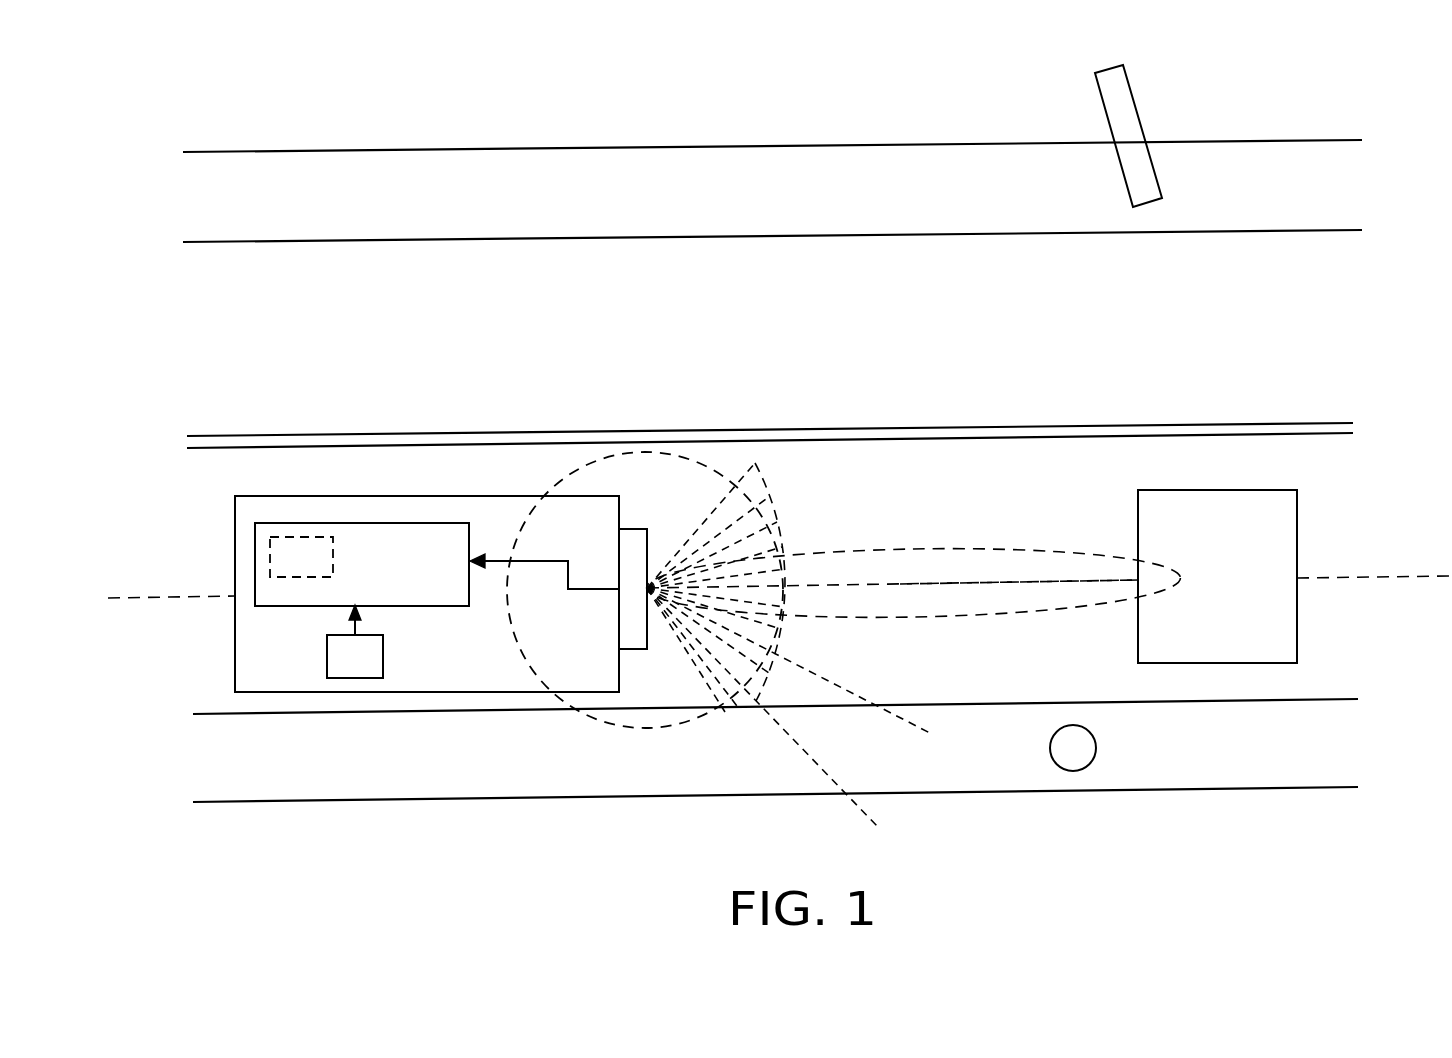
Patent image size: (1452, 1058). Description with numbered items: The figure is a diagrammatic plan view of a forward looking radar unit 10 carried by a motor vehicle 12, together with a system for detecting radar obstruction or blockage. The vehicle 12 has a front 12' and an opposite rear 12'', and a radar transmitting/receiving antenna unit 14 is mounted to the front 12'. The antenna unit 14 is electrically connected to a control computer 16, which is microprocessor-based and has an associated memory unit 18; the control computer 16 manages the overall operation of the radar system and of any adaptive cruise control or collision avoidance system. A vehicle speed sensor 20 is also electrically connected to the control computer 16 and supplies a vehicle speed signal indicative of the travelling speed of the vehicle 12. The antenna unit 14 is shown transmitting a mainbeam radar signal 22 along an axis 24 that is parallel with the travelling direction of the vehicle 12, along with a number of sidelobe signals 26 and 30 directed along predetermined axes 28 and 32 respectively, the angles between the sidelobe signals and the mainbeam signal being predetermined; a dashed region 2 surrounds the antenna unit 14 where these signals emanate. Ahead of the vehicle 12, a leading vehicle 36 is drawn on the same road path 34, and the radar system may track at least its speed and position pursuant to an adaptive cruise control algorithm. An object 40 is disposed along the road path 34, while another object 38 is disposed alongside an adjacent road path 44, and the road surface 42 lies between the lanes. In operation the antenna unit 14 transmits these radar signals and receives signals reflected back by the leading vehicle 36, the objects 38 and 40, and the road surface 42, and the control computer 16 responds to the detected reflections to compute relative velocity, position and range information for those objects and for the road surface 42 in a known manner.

The sensing region 2 is at (575, 462).
The forward looking radar unit 10 is at (419, 659).
The motor vehicle 12 is at (427, 570).
The front 12' is at (653, 671).
The rear 12'' is at (192, 656).
The radar transmitting/receiving antenna unit 14 is at (632, 528).
The control computer 16 is at (380, 522).
The memory unit 18 is at (300, 536).
The vehicle speed sensor 20 is at (384, 648).
The mainbeam radar signal 22 is at (950, 548).
The axis 24 is at (1020, 578).
The sidelobe signals 26 is at (788, 508).
The axis 28 is at (848, 690).
The sidelobe signals 30 is at (755, 465).
The axis 32 is at (830, 775).
The road path 34 is at (1036, 676).
The leading vehicle 36 is at (1297, 500).
The object 38 is at (1133, 90).
The object 40 is at (1097, 752).
The road surface 42 is at (1052, 460).
The road path 44 is at (891, 324).